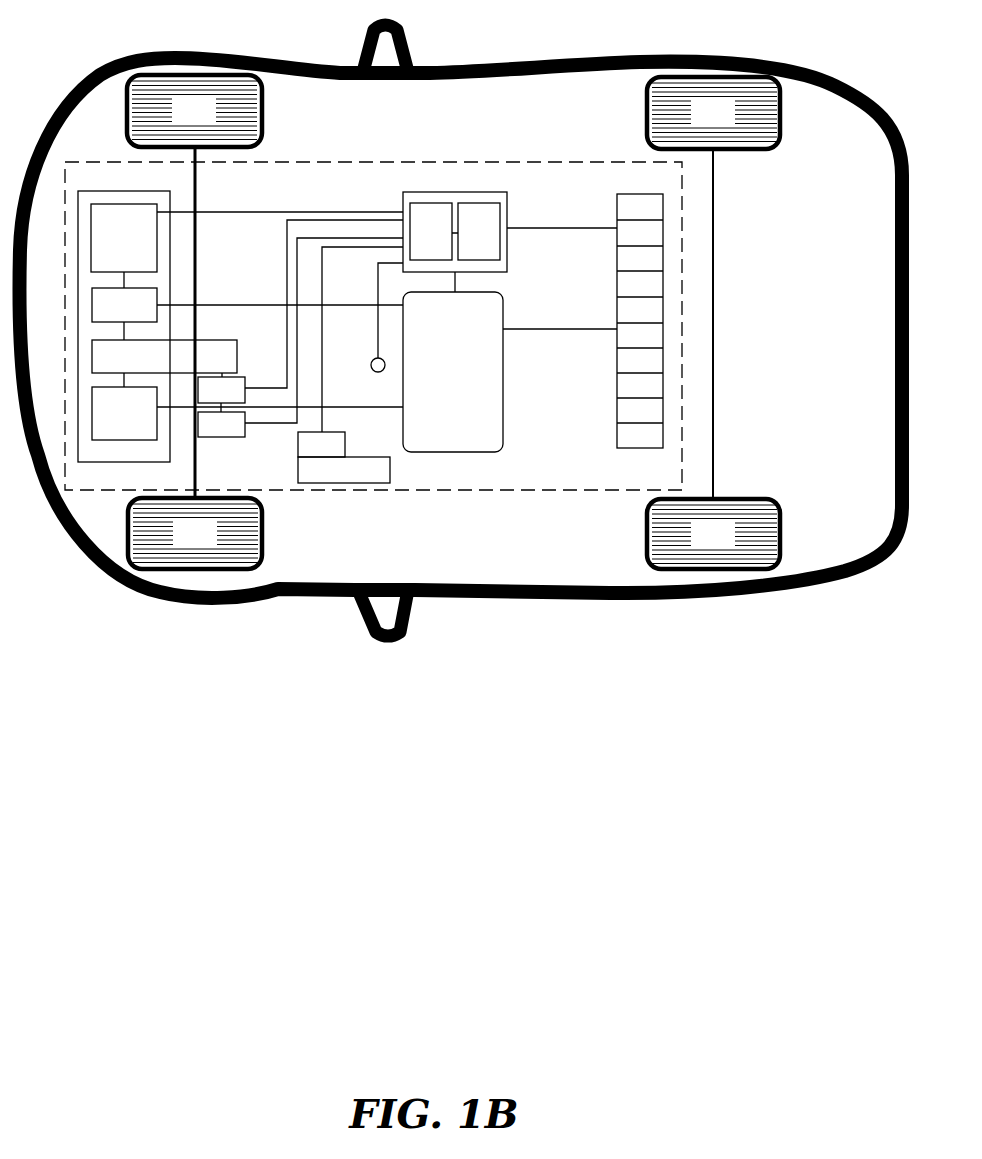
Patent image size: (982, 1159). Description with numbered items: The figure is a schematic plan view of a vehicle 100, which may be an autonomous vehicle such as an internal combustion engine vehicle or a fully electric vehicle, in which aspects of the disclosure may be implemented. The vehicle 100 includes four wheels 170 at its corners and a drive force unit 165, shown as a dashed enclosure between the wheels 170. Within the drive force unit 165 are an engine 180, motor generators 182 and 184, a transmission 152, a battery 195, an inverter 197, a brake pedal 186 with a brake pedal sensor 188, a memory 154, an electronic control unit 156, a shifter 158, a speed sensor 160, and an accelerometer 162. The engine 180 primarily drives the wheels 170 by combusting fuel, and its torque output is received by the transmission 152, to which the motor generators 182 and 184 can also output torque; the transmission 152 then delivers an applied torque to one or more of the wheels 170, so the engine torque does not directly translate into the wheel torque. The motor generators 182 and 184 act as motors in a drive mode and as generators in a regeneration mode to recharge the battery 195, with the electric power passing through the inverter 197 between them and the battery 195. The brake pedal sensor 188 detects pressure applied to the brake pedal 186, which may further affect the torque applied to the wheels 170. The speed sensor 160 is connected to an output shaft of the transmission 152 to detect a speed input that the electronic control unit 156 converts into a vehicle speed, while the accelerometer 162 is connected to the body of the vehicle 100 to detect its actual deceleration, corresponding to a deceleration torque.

The vehicle 100 is at (522, 66).
The drive force unit 165 is at (450, 162).
The wheels 170 is at (180, 119).
The engine 180 is at (110, 248).
The motor generator 182 is at (110, 313).
The transmission 152 is at (150, 365).
The motor generator 184 is at (110, 422).
The speed sensor 160 is at (207, 398).
The accelerometer 162 is at (207, 433).
The electronic control unit 156 is at (417, 240).
The memory 154 is at (465, 240).
The inverter 197 is at (439, 378).
The battery 195 is at (617, 375).
The brake pedal sensor 188 is at (308, 453).
The brake pedal 186 is at (330, 479).
The shifter 158 is at (370, 369).